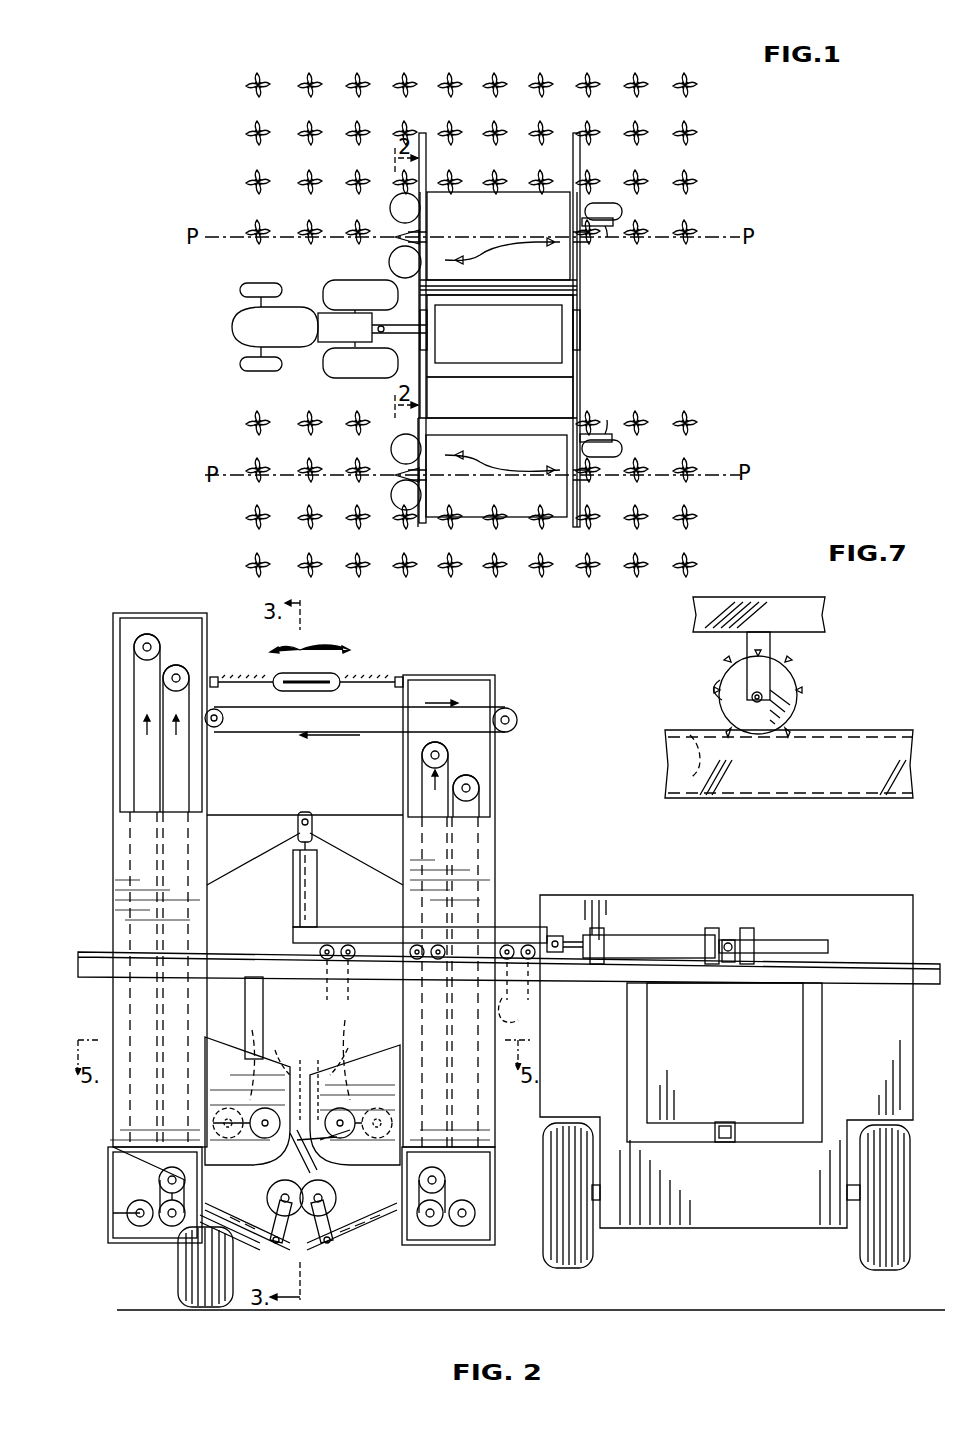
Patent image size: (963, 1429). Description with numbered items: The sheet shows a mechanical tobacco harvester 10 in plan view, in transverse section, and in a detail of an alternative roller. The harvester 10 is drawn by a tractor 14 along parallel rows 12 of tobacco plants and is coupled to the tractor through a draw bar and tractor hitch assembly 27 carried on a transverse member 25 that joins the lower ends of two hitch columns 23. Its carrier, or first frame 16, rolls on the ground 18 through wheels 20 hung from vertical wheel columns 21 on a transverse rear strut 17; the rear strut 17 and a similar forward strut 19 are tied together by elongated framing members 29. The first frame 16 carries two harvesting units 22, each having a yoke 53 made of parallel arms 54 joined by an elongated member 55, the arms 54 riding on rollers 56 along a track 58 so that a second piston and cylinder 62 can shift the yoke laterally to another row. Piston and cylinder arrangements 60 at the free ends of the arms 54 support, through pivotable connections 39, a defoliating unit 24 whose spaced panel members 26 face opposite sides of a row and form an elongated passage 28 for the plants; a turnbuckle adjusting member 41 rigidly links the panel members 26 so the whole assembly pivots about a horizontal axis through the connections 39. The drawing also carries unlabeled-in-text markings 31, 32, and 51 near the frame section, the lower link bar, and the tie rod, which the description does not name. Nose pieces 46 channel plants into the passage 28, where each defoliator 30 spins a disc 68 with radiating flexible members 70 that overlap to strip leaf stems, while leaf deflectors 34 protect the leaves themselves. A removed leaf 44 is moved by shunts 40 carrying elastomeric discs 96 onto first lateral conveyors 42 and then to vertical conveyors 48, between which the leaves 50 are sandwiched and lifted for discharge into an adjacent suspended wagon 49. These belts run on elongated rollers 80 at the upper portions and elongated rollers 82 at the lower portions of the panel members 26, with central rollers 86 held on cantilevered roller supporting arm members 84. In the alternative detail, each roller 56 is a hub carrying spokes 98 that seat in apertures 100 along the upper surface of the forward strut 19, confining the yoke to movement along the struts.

In FIG. 1, the tobacco harvester 10 is at (512, 520).
In FIG. 2, the tobacco harvester 10 is at (547, 732).
In FIG. 1, the rows 12 is at (248, 86).
In FIG. 1, the tractor 14 is at (240, 325).
In FIG. 1, the first frame 16 is at (582, 332).
In FIG. 2, the first frame 16 is at (268, 985).
In FIG. 1, the rear strut 17 is at (573, 158).
In FIG. 1, the ground 18 is at (731, 330).
In FIG. 1, the forward strut 19 is at (427, 158).
In FIG. 7, the forward strut 19 is at (835, 798).
In FIG. 2, the forward strut 19 is at (105, 952).
In FIG. 1, the wheel 20 is at (622, 211).
In FIG. 2, the wheel 20 is at (178, 1270).
In FIG. 1, the wheel column 21 is at (612, 236).
In FIG. 2, the harvesting unit 22 is at (488, 906).
In FIG. 2, the hitch column 23 is at (805, 1043).
In FIG. 2, the defoliating unit 24 is at (310, 646).
In FIG. 2, the transverse member 25 is at (775, 1123).
In FIG. 2, the panel member 26 is at (207, 798).
In FIG. 1, the draw bar and tractor hitch assembly 27 is at (395, 310).
In FIG. 2, the draw bar and tractor hitch assembly 27 is at (725, 1142).
In FIG. 1, the elongated passage 28 is at (392, 232).
In FIG. 2, the elongated passage 28 is at (301, 1258).
In FIG. 1, the framing member 29 is at (525, 290).
In FIG. 2, the framing member 29 is at (517, 1010).
In FIG. 2, the defoliator 30 is at (245, 1108).
In FIG. 1, the frame section 31 is at (497, 359).
In FIG. 2, the lower link bar 32 is at (300, 1255).
In FIG. 2, the leaf deflector 34 is at (335, 1060).
In FIG. 1, the pivotable connection 39 is at (575, 232).
In FIG. 2, the pivotable connection 39 is at (305, 812).
In FIG. 2, the shunt 40 is at (333, 1172).
In FIG. 2, the adjusting member 41 is at (268, 680).
In FIG. 2, the first lateral conveyor 42 is at (407, 1240).
In FIG. 2, the leaf 44 is at (270, 1180).
In FIG. 1, the plant channeling nose piece 46 is at (412, 212).
In FIG. 2, the vertical conveyor 48 is at (134, 748).
In FIG. 1, the wagon 49 is at (500, 336).
In FIG. 2, the wagon 49 is at (758, 895).
In FIG. 2, the leaves 50 is at (170, 660).
In FIG. 2, the tie rod 51 is at (365, 680).
In FIG. 1, the yoke 53 is at (520, 238).
In FIG. 1, the arm 54 is at (405, 262).
In FIG. 7, the arm 54 is at (800, 597).
In FIG. 2, the arm 54 is at (360, 927).
In FIG. 1, the elongated member 55 is at (555, 285).
In FIG. 7, the roller 56 is at (790, 682).
In FIG. 2, the roller 56 is at (340, 960).
In FIG. 7, the track 58 is at (842, 730).
In FIG. 2, the track 58 is at (243, 952).
In FIG. 2, the piston and cylinder arrangement 60 is at (317, 875).
In FIG. 1, the second piston and cylinder 62 is at (580, 312).
In FIG. 2, the second piston and cylinder 62 is at (775, 935).
In FIG. 2, the disc 68 is at (319, 1054).
In FIG. 2, the elongated flexible member 70 is at (252, 1026).
In FIG. 2, the elongated roller 80 is at (152, 640).
In FIG. 2, the elongated roller 82 is at (160, 1218).
In FIG. 2, the roller supporting arm member 84 is at (345, 1250).
In FIG. 2, the central roller 86 is at (272, 1245).
In FIG. 2, the elastomeric disc 96 is at (278, 1175).
In FIG. 7, the spoke 98 is at (722, 680).
In FIG. 7, the aperture 100 is at (696, 756).